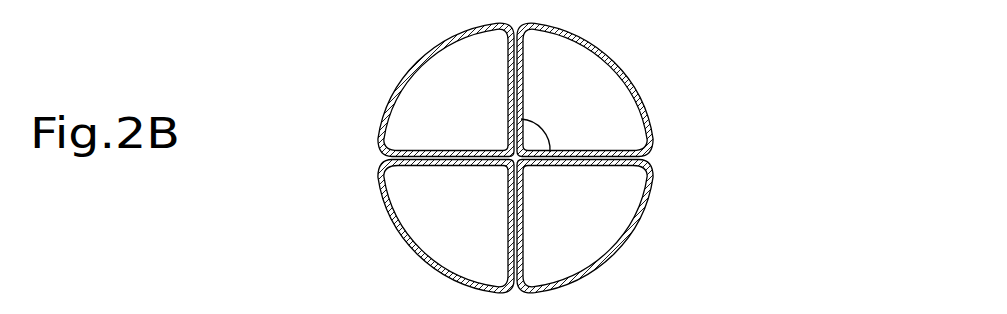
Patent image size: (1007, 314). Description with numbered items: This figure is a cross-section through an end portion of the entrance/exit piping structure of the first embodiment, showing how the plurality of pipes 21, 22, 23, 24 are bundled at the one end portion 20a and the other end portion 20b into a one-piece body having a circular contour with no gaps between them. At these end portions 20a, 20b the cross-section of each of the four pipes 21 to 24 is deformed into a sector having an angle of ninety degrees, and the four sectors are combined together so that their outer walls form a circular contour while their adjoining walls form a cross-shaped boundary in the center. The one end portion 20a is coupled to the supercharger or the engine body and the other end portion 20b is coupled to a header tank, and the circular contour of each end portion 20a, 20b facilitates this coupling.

The one end portion 20a is at (567, 158).
The other end portion 20b is at (567, 158).
The pipe 21 is at (420, 100).
The pipe 22 is at (600, 90).
The pipe 23 is at (430, 216).
The pipe 24 is at (597, 230).